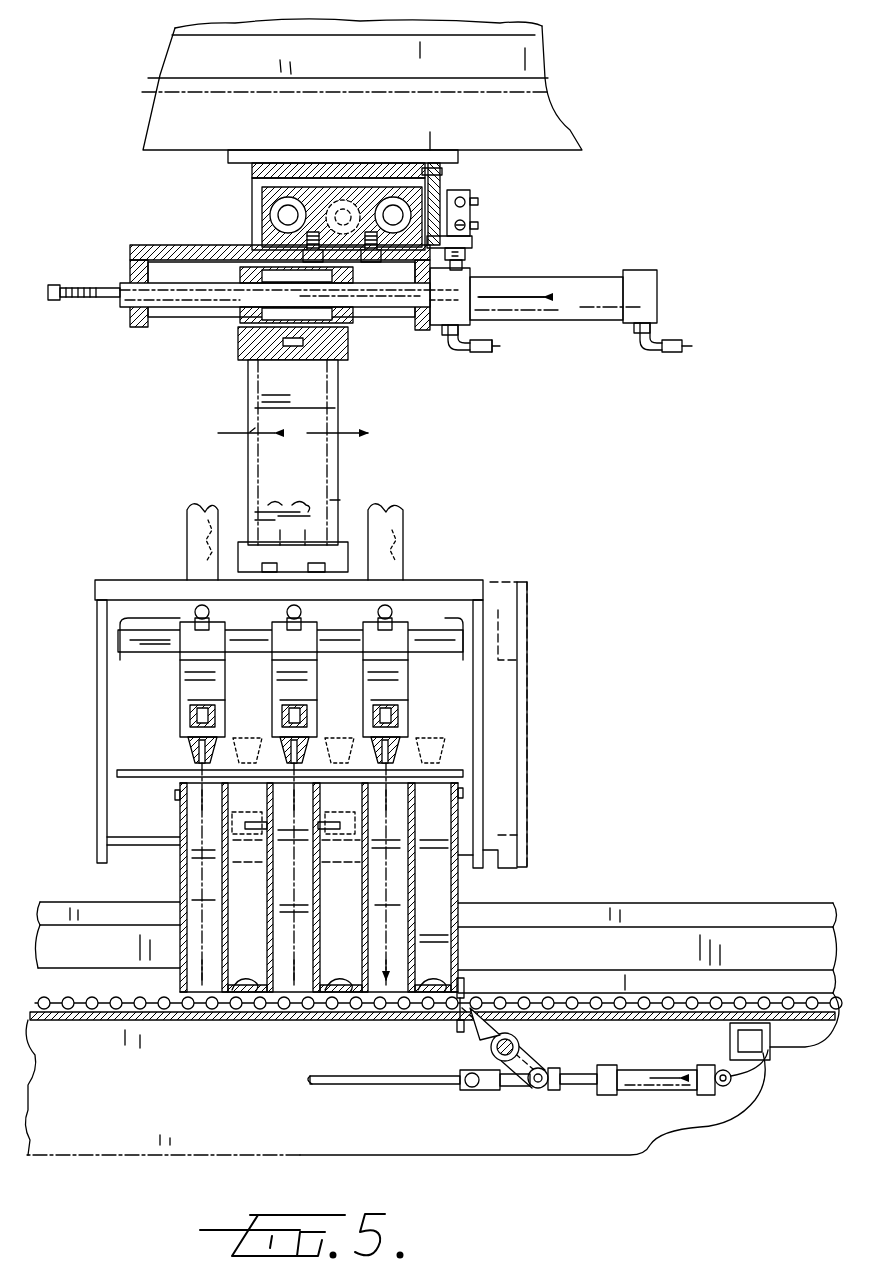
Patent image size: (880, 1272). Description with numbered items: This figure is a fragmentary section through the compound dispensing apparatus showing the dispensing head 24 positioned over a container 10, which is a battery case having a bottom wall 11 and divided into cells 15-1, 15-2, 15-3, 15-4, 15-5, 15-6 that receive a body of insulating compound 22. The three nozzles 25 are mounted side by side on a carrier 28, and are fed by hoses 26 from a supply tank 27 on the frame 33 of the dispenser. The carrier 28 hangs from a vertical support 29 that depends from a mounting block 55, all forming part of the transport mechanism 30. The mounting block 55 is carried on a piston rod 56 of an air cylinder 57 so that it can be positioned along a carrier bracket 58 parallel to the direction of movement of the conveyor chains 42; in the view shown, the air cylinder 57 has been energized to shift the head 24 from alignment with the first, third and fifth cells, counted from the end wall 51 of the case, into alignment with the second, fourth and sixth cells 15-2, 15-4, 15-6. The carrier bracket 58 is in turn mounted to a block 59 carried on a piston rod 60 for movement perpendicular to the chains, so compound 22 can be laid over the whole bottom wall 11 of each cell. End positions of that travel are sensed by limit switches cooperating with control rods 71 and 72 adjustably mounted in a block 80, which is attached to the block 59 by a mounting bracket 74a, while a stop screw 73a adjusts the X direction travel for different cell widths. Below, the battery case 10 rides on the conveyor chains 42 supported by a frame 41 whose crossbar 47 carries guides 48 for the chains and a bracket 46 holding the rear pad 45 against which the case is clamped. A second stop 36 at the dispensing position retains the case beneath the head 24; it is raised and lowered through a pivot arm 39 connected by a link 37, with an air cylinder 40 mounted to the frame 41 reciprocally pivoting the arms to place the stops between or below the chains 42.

The container 10 is at (178, 917).
The bottom wall 11 is at (275, 992).
The cell 15-1 is at (436, 891).
The cell 15-2 is at (388, 872).
The cell 15-3 is at (339, 856).
The cell 15-4 is at (296, 871).
The cell 15-5 is at (250, 869).
The cell 15-6 is at (204, 875).
The body of insulating compound 22 is at (245, 1000).
The dispensing head 24 is at (168, 620).
The nozzles 25 is at (283, 680).
The hoses 26 is at (192, 520).
The supply tank 27 is at (540, 26).
The carrier 28 is at (445, 585).
The vertical support 29 is at (248, 412).
The transport mechanism 30 is at (142, 325).
The frame 33 is at (565, 118).
The second stop 36 is at (470, 990).
The link 37 is at (370, 1085).
The pivot arm 39 is at (525, 1060).
The air cylinder 40 is at (652, 1092).
The frame 41 is at (750, 1100).
The conveyor chains 42 is at (725, 995).
The rear pad 45 is at (693, 930).
The bracket 46 is at (645, 905).
The crossbar 47 is at (772, 1048).
The guides 48 is at (640, 1020).
The end wall 51 is at (458, 950).
The mounting block 55 is at (272, 315).
The piston rod 56 is at (378, 310).
The air cylinder 57 is at (565, 322).
The carrier bracket 58 is at (160, 248).
The block 59 is at (258, 205).
The piston rod 60 is at (343, 205).
The control rod 71 is at (468, 192).
The control rod 72 is at (478, 225).
The stop screw 73a is at (50, 286).
The mounting bracket 74a is at (475, 242).
The block 80 is at (478, 204).